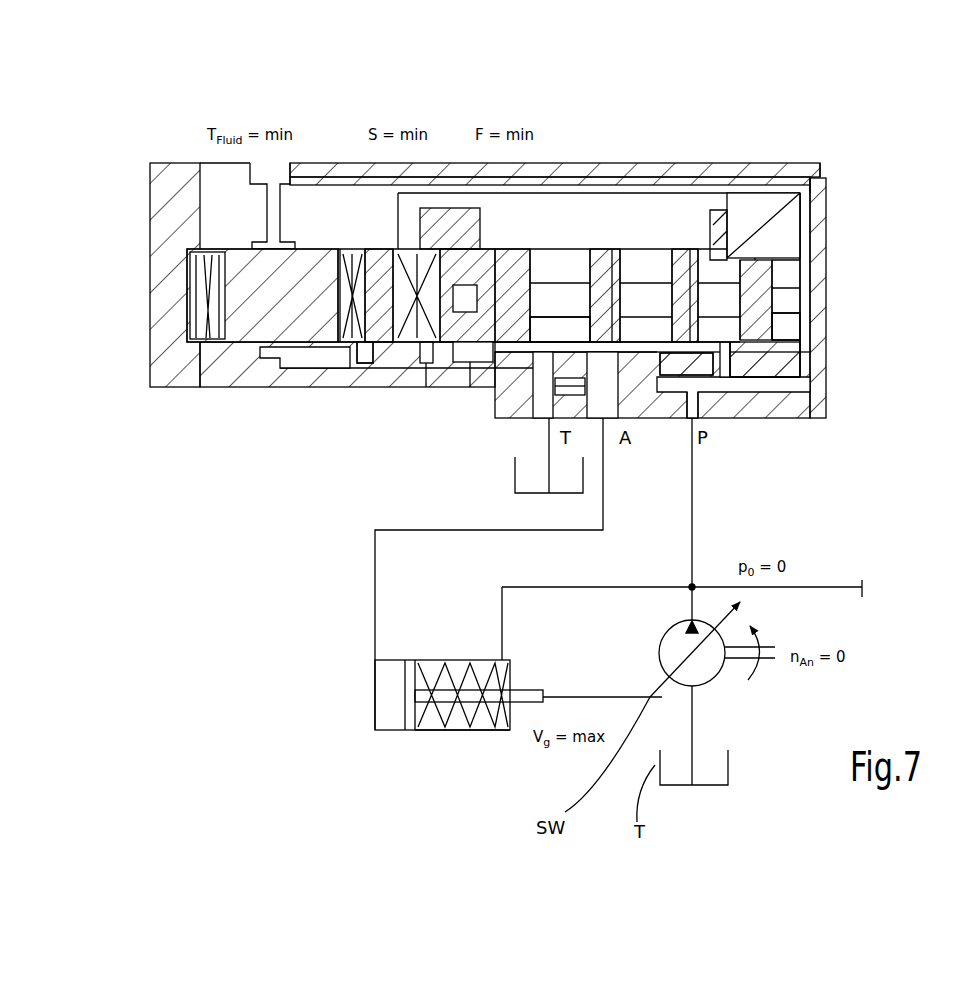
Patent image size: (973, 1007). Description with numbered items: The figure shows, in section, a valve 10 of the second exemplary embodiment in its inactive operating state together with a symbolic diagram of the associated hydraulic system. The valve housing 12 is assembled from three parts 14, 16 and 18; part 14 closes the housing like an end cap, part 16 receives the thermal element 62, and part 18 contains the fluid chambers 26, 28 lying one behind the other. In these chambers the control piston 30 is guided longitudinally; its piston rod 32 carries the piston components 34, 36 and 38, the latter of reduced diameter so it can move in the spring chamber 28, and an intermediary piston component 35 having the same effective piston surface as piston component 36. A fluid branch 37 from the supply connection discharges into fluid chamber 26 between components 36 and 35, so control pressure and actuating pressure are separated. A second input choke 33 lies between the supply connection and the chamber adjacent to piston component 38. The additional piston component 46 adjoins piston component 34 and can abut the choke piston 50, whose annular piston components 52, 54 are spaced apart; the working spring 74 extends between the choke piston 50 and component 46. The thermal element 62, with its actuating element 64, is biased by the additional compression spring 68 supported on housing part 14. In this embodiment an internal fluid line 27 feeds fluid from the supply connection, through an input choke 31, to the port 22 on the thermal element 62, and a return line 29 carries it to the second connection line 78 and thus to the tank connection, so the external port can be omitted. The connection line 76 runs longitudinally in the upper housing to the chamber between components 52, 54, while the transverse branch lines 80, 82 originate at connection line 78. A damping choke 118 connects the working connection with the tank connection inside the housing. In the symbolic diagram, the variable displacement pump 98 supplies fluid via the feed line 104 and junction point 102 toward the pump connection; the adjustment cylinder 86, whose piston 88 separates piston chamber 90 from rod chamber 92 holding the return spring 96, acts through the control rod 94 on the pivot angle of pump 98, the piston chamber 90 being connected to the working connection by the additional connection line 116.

The valve 10 is at (200, 505).
The valve housing 12 is at (830, 378).
The valve housing part 14 is at (170, 170).
The valve housing part 16 is at (341, 165).
The valve housing part 18 is at (556, 180).
The fluid port 22 is at (292, 162).
The fluid chamber 26 is at (738, 322).
The fluid line 27 is at (752, 190).
The fluid chamber 28 is at (786, 327).
The return line 29 is at (285, 372).
The control piston 30 is at (822, 188).
The input choke 31 is at (742, 380).
The piston rod 32 is at (589, 246).
The second input choke 33 is at (722, 365).
The piston component 34 is at (533, 326).
The intermediary piston component 35 is at (689, 250).
The piston component 36 is at (612, 250).
The fluid branch 37 is at (650, 378).
The piston component 38 is at (768, 270).
The additional piston component 46 is at (533, 266).
The choke piston 50 is at (352, 262).
The piston component 52 is at (352, 388).
The piston component 54 is at (397, 380).
The thermal element 62 is at (228, 348).
The actuating element 64 is at (308, 388).
The additional compression spring 68 is at (190, 318).
The working spring 74 is at (387, 262).
The connection line 76 is at (770, 200).
The second connection line 78 is at (476, 372).
The branch line 80 is at (470, 387).
The branch line 82 is at (430, 388).
The adjustment cylinder 86 is at (370, 683).
The piston 88 is at (410, 676).
The piston chamber 90 is at (393, 720).
The rod chamber 92 is at (437, 720).
The control rod 94 is at (520, 692).
The return spring 96 is at (442, 682).
The variable displacement pump 98 is at (712, 687).
The junction point 102 is at (688, 585).
The feed line 104 is at (700, 507).
The additional connection line 116 is at (472, 532).
The damping choke 118 is at (548, 386).